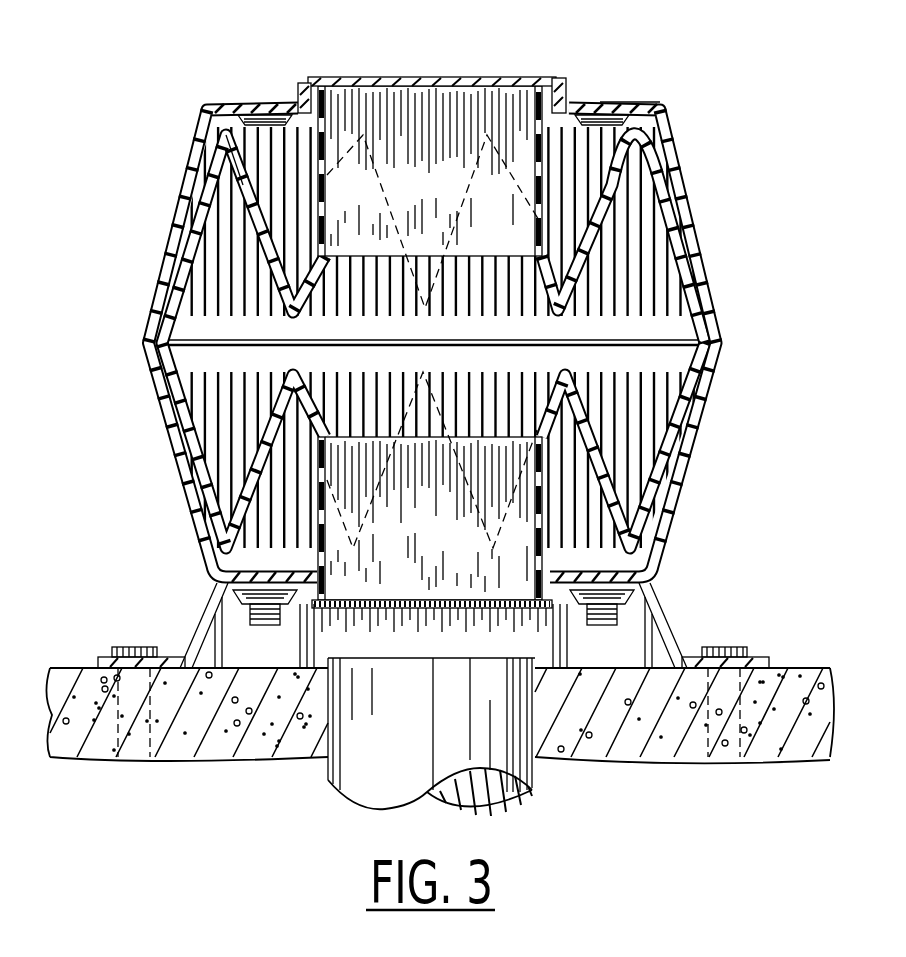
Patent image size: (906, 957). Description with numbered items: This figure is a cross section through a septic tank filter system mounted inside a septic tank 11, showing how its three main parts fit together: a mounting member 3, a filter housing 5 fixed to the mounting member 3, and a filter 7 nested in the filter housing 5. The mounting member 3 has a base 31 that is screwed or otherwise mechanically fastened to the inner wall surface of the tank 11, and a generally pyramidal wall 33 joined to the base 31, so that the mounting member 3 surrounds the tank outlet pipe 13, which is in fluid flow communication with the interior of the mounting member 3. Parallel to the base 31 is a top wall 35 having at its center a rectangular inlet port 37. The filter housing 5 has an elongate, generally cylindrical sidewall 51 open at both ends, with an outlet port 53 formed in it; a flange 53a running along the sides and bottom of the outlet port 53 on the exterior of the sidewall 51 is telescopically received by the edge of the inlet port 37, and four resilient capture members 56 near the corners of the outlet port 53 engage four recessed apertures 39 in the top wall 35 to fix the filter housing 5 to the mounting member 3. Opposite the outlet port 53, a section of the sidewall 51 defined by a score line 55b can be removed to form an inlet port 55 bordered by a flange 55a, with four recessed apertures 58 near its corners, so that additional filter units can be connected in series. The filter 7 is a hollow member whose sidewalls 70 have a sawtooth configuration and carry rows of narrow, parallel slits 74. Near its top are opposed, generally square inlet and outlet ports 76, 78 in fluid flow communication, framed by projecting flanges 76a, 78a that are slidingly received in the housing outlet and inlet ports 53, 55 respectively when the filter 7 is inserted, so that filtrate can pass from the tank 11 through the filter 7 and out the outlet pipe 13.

The mounting member 3 is at (426, 601).
The filter housing 5 is at (407, 331).
The filter 7 is at (258, 170).
The septic tank 11 is at (665, 748).
The tank outlet pipe 13 is at (360, 756).
The base 31 is at (757, 658).
The pyramidal wall 33 is at (185, 638).
The top wall 35 is at (236, 580).
The inlet port 37 is at (532, 628).
The recessed apertures 39 is at (287, 615).
The sidewall 51 is at (407, 342).
The outlet port 53 is at (443, 463).
The flange 53a is at (318, 610).
The inlet port 55 is at (441, 100).
The flange 55a is at (562, 80).
The score line 55b is at (306, 80).
The resilient capture members 56 is at (600, 622).
The recessed apertures 58 is at (628, 122).
The sidewalls 70 is at (272, 243).
The slits 74 is at (213, 400).
The inlet port 76 is at (430, 157).
The flange 76a is at (325, 98).
The outlet port 78 is at (430, 486).
The flange 78a is at (327, 566).